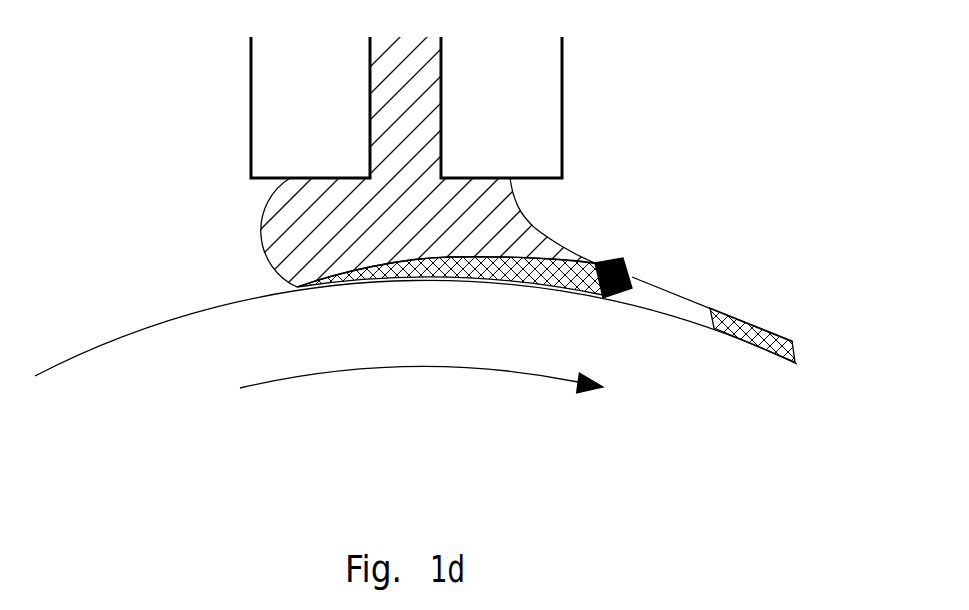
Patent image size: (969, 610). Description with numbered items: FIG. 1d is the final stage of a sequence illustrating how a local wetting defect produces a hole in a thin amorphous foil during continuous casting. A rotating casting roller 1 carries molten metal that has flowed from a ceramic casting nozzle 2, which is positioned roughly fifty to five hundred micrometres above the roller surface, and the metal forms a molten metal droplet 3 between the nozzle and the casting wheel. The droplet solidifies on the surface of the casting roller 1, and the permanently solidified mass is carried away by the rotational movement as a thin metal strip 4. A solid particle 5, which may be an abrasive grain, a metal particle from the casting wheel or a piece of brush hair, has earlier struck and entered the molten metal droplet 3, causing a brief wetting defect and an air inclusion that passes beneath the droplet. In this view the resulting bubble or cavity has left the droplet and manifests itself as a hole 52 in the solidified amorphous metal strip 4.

The casting roller 1 is at (633, 345).
The ceramic casting nozzle 2 is at (533, 87).
The molten metal droplet 3 is at (497, 220).
The metal strip 4 is at (757, 322).
The solid particle 5 is at (627, 268).
The hole 52 is at (670, 305).